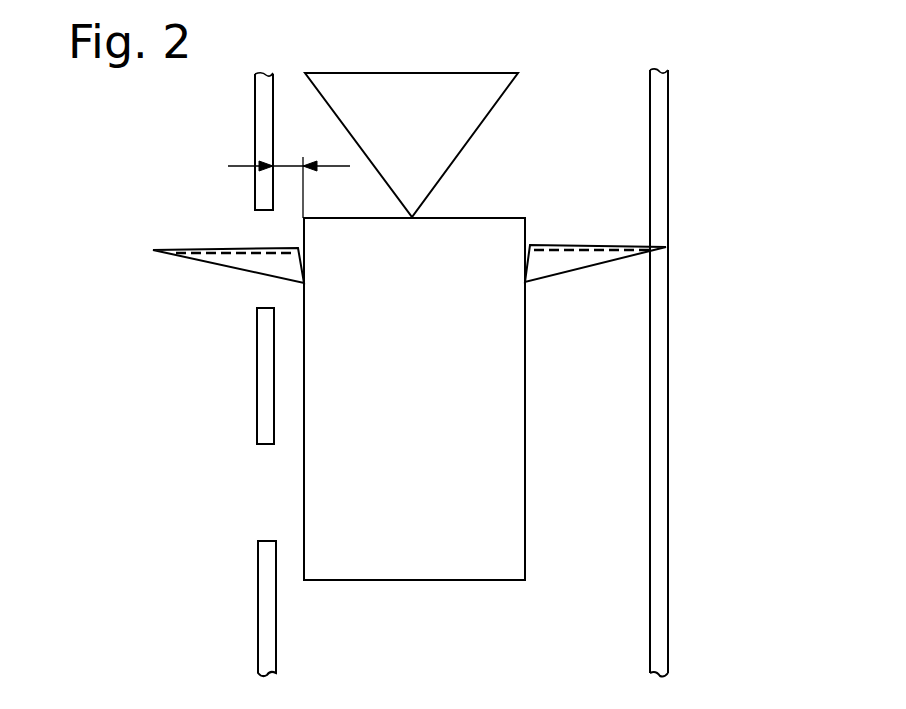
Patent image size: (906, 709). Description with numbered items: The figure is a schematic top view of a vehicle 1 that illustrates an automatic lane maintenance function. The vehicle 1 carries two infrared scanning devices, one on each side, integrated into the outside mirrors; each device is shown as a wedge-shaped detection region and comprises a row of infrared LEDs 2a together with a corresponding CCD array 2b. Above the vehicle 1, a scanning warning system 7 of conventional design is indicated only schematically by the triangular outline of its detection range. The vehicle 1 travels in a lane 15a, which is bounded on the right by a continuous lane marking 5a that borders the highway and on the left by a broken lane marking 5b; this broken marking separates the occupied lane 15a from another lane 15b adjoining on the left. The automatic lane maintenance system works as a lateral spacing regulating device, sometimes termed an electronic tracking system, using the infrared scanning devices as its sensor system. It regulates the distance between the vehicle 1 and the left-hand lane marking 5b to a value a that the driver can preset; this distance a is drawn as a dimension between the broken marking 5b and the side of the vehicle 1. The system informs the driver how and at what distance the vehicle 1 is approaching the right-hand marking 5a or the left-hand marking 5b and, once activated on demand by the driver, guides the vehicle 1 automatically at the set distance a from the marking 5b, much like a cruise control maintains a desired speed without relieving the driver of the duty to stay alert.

The vehicle 1 is at (430, 409).
The scanning warning system 7 is at (428, 134).
The lane 15a is at (591, 133).
The another lane 15b is at (223, 136).
The row of infrared LEDs 2a is at (551, 259).
The CCD array 2b is at (243, 261).
The continuous lane marking 5a is at (660, 439).
The broken lane marking 5b is at (266, 422).
The preset distance value a is at (289, 179).